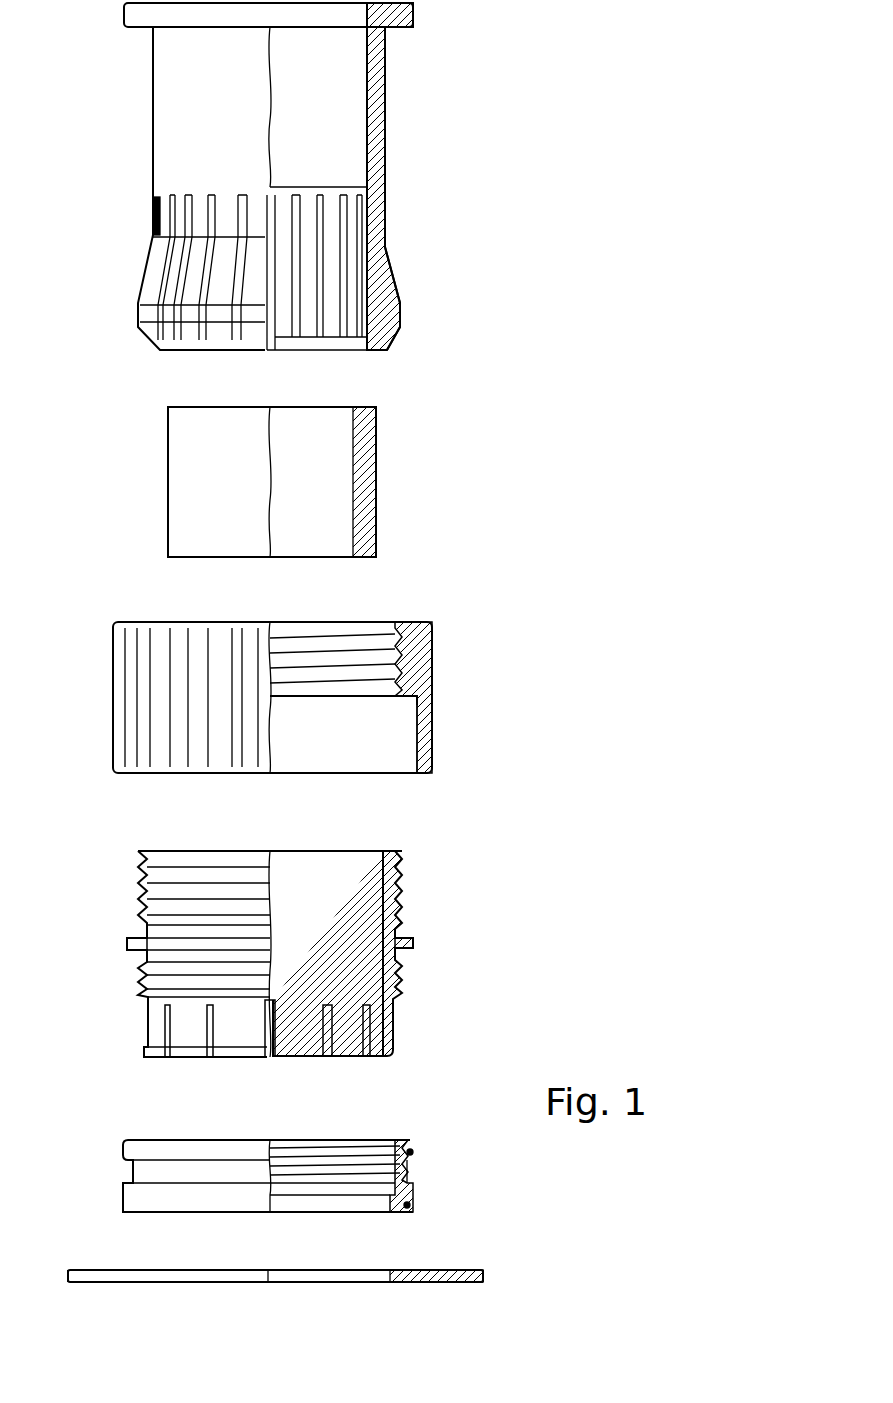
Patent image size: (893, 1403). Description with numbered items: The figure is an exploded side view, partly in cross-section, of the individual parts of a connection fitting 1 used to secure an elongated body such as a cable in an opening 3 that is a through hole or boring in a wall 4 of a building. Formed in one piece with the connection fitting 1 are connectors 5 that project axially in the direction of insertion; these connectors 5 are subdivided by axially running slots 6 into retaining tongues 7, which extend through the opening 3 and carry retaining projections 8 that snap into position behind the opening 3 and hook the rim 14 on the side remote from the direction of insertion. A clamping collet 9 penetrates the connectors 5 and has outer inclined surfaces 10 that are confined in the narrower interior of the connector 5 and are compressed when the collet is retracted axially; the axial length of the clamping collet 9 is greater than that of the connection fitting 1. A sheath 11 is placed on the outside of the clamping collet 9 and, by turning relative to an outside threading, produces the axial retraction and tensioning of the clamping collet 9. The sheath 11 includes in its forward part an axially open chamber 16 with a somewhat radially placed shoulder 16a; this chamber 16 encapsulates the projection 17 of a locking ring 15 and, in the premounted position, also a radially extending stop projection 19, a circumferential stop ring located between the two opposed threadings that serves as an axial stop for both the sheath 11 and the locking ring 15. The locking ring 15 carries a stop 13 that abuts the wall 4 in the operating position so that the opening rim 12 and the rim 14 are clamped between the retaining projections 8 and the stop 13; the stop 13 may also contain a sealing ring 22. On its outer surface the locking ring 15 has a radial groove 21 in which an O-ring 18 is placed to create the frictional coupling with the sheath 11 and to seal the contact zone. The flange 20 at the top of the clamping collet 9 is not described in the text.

The connection fitting 1 is at (122, 978).
The opening 3 is at (325, 1274).
The wall 4 is at (92, 1270).
The connector 5 is at (142, 1030).
The slot 6 is at (173, 1030).
The retaining tongue 7 is at (243, 1030).
The retaining projection 8 is at (148, 1047).
The clamping collet 9 is at (170, 122).
The inclined surface 10 is at (396, 258).
The sheath 11 is at (138, 692).
The opening rim 12 is at (396, 1270).
The stop 13 is at (412, 1205).
The rim 14 is at (397, 1283).
The locking ring 15 is at (133, 1197).
The chamber 16 is at (405, 718).
The shoulder 16a is at (415, 701).
The projection 17 is at (410, 1142).
The O-ring 18 is at (414, 1152).
The stop projection 19 is at (136, 940).
The cap top flange 20 is at (413, 12).
The groove 21 is at (413, 1172).
The sealing ring 22 is at (405, 1209).